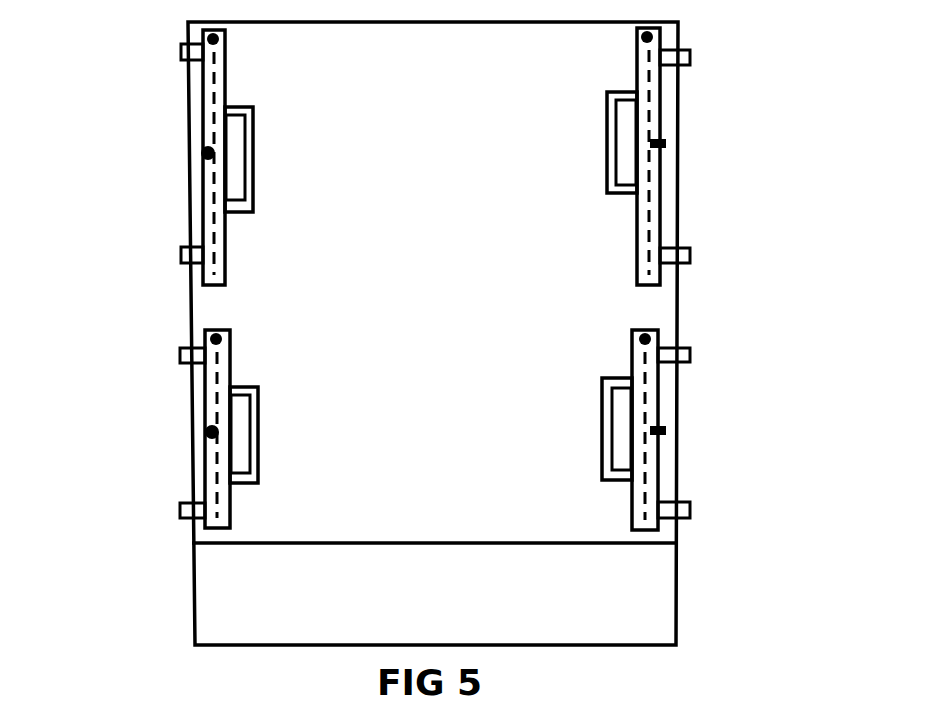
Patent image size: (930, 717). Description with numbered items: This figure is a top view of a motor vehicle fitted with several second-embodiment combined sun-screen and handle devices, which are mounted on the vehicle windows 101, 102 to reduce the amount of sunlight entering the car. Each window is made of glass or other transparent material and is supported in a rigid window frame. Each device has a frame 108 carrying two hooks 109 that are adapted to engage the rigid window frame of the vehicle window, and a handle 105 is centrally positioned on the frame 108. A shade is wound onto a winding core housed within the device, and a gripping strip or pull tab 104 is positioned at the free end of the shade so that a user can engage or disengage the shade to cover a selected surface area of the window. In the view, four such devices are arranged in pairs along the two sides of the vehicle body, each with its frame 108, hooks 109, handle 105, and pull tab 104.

The window 101 is at (190, 100).
The window 102 is at (672, 128).
The pull tab 104 is at (203, 152).
The handle 105 is at (253, 130).
The frame 108 is at (220, 80).
The hooks 109 is at (181, 52).